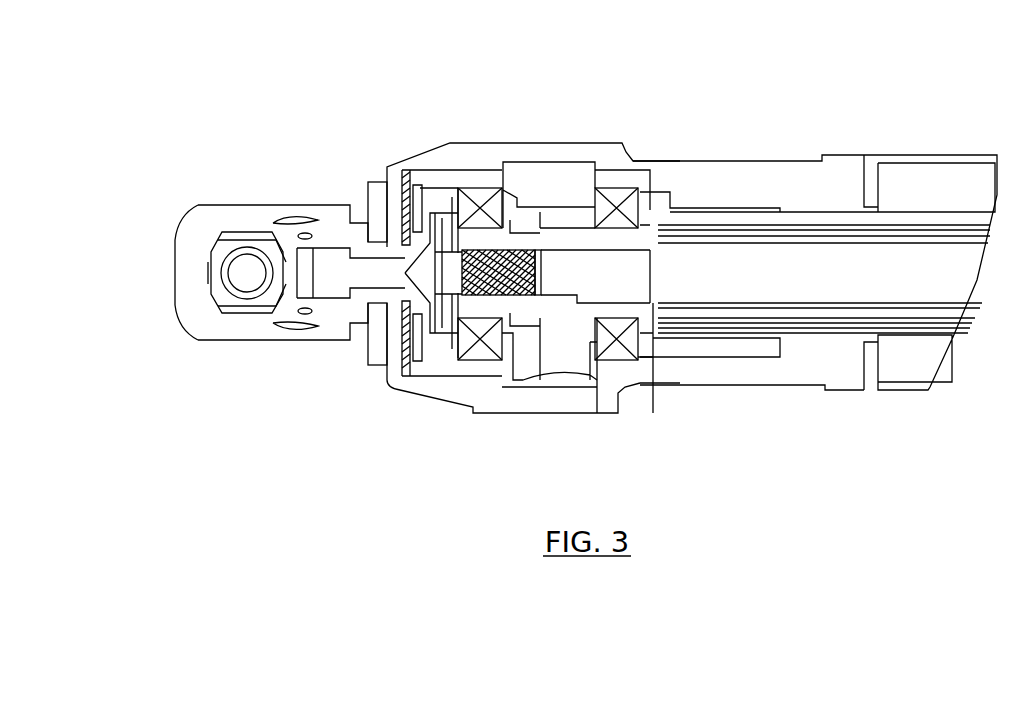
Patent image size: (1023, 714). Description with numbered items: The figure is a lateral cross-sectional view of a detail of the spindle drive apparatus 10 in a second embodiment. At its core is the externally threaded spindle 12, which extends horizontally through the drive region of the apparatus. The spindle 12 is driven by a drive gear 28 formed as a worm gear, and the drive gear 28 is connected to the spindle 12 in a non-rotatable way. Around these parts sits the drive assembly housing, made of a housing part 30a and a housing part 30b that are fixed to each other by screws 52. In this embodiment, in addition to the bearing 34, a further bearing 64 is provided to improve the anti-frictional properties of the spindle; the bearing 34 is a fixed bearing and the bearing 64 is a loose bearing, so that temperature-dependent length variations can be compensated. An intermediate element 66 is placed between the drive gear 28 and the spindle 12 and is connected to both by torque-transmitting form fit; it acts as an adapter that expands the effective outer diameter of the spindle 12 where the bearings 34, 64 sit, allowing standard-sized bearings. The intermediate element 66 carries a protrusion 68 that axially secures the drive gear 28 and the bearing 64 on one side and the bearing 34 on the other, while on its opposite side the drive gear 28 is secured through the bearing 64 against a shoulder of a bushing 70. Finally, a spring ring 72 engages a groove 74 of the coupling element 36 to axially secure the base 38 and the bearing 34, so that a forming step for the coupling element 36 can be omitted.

The spindle drive apparatus 10 is at (870, 87).
The spindle 12 is at (720, 267).
The drive gear 28 is at (572, 200).
The housing part 30a is at (537, 403).
The housing part 30b is at (602, 403).
The bearing 34 is at (468, 203).
The coupling element 36 is at (447, 180).
The base 38 is at (382, 267).
The screws 52 is at (630, 157).
The bearing 64 is at (612, 195).
The intermediate element 66 is at (506, 234).
The protrusion 68 is at (532, 212).
The bushing 70 is at (647, 233).
The spring ring 72 is at (415, 192).
The groove 74 is at (417, 195).